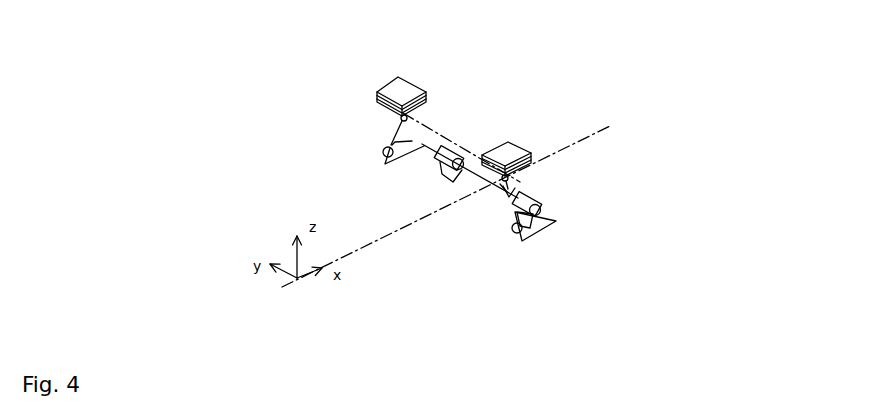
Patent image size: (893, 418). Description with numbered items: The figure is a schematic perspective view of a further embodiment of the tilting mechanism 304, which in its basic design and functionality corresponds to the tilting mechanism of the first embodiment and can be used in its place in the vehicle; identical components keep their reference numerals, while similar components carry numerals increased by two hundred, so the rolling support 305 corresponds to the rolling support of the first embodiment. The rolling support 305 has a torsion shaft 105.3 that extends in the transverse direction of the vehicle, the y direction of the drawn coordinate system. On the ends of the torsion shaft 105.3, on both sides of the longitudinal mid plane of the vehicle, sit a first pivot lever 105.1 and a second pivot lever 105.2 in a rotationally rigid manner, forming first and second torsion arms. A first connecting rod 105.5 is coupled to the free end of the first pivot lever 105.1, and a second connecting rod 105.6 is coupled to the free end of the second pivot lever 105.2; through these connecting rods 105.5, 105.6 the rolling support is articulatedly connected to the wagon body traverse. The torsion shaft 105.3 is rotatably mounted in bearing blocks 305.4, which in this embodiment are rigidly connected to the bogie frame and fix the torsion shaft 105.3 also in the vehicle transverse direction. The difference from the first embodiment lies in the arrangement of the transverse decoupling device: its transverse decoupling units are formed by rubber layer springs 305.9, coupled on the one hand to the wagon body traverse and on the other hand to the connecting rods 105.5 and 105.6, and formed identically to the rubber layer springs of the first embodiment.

The tilting mechanism 304 is at (577, 68).
The rotation axis 305 is at (557, 132).
The rubber layer springs 305.9 is at (409, 83).
The bearing blocks 305.4 is at (537, 196).
The first pivot lever 105.1 is at (534, 240).
The second pivot lever 105.2 is at (407, 151).
The torsion shaft 105.3 is at (492, 192).
The first connecting rod 105.5 is at (508, 193).
The second connecting rod 105.6 is at (387, 138).